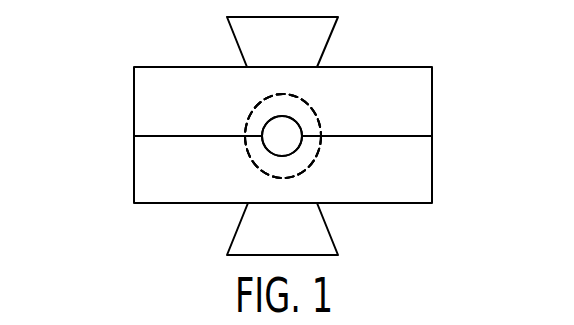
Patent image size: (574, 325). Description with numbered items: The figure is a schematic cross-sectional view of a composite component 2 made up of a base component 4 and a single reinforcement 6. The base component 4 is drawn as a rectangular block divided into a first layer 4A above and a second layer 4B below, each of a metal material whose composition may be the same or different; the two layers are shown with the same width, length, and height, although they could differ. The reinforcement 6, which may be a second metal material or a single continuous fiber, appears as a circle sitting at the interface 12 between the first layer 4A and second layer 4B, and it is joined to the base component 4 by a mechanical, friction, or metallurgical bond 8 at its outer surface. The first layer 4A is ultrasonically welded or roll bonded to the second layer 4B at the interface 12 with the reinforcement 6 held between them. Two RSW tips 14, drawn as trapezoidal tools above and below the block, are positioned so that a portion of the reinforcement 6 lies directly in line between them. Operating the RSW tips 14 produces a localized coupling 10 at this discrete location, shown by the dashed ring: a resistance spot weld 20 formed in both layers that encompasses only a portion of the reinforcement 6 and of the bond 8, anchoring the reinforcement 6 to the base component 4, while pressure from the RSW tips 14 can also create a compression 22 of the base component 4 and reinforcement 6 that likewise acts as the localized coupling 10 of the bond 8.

The composite component 2 is at (455, 50).
The base component 4 is at (83, 68).
The first layer 4A is at (157, 98).
The second layer 4B is at (157, 175).
The reinforcement 6 is at (280, 133).
The bond 8 is at (293, 118).
The localized coupling 10 is at (310, 161).
The interface 12 is at (402, 137).
The RSW tips 14 is at (252, 33).
The resistance spot weld 20 is at (283, 136).
The compression 22 is at (283, 136).